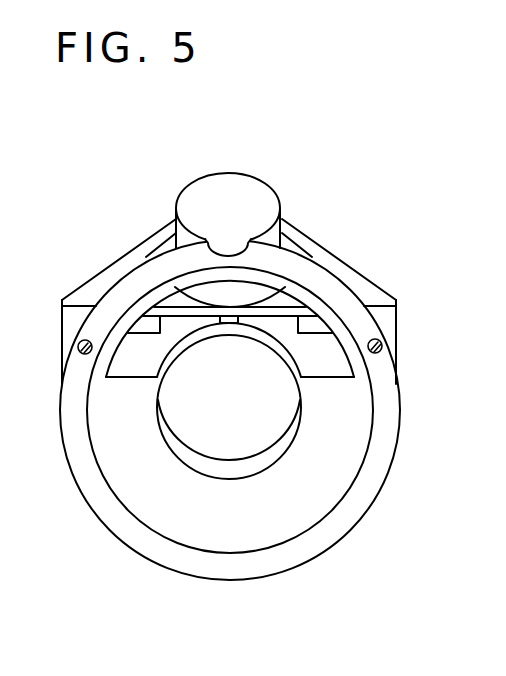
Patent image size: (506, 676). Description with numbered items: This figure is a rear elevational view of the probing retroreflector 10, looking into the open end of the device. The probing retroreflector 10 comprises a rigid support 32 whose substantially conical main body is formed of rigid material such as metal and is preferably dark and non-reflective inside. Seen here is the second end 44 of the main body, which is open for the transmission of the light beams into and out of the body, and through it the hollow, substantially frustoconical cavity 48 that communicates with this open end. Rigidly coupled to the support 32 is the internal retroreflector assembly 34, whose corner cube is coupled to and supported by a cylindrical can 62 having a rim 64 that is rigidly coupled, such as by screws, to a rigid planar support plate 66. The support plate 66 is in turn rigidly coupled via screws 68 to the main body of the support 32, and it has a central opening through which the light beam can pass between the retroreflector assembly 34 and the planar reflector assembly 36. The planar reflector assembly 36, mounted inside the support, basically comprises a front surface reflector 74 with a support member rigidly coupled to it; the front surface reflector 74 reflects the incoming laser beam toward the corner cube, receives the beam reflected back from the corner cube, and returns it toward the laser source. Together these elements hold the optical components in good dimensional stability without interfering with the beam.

The probing retroreflector 10 is at (333, 183).
The rigid support 32 is at (340, 560).
The internal retroreflector assembly 34 is at (212, 172).
The planar reflector assembly 36 is at (312, 427).
The second end 44 is at (283, 560).
The frustoconical cavity 48 is at (137, 502).
The cylindrical can 62 is at (263, 180).
The rim 64 is at (296, 245).
The support plate 66 is at (360, 277).
The screws 68 is at (78, 345).
The front surface reflector 74 is at (258, 444).